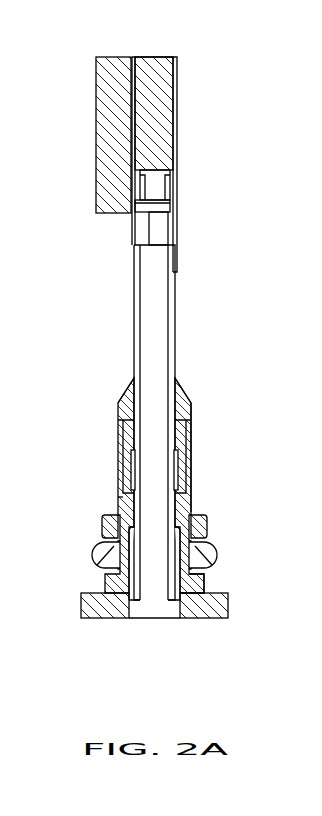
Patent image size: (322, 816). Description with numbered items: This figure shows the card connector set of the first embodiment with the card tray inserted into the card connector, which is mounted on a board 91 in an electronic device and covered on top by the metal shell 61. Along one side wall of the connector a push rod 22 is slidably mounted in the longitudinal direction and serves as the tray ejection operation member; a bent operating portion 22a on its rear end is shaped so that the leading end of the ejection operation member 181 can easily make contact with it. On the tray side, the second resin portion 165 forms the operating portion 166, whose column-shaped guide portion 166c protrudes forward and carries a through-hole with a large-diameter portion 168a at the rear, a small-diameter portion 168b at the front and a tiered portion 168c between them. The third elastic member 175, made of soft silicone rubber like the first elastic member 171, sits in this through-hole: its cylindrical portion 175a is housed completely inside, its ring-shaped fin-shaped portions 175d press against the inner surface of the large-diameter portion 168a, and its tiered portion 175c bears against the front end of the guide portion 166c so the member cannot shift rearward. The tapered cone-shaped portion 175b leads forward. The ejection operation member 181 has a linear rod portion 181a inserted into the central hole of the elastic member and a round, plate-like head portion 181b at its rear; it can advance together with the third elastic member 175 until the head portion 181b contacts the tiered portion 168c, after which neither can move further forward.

The shell 61 is at (178, 80).
The push rod 22 is at (156, 134).
The board 91 is at (96, 205).
The operating portion 22a is at (165, 207).
The ejection operation member 181 is at (158, 314).
The rod portion 181a is at (168, 334).
The cone-shaped portion 175b is at (213, 382).
The tiered portion 175c is at (191, 412).
The guide portion 166c is at (121, 455).
The cylindrical portion 175a is at (121, 473).
The fin-shaped portion 175d is at (121, 500).
The small-diameter portion 168b is at (191, 473).
The operating portion 166 is at (103, 518).
The tiered portion 168c is at (207, 530).
The first elastic member 171 is at (93, 553).
The third elastic member 175 is at (104, 577).
The large-diameter portion 168a is at (218, 582).
The second resin portion 165 is at (80, 608).
The head portion 181b is at (154, 619).